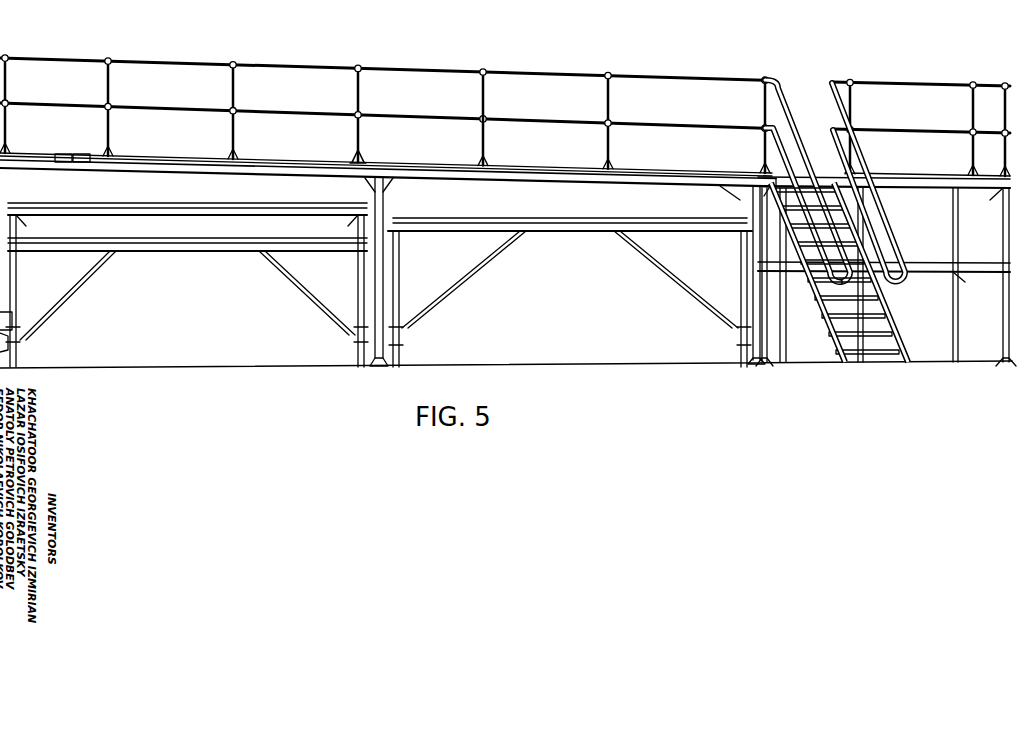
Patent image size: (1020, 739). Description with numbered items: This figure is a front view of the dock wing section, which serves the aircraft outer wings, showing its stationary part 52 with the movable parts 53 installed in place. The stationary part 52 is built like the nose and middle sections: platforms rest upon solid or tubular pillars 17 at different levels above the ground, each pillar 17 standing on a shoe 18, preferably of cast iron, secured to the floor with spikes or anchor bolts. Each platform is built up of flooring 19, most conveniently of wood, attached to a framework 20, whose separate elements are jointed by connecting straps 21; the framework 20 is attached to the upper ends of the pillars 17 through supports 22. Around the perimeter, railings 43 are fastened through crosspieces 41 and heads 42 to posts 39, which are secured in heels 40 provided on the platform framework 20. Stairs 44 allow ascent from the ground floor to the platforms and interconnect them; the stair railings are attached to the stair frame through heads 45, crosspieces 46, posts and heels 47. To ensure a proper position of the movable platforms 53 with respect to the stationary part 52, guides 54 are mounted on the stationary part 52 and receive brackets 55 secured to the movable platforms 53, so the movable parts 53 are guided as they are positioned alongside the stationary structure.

The pillar 17 is at (365, 183).
The shoe 18 is at (1003, 357).
The flooring 19 is at (143, 165).
The framework 20 is at (40, 155).
The connecting strap 21 is at (79, 155).
The support 22 is at (360, 174).
The post 39 is at (363, 97).
The heel 40 is at (362, 162).
The crosspiece 41 is at (483, 118).
The head 42 is at (486, 71).
The railing 43 is at (583, 73).
The stairs 44 is at (892, 343).
The head 45 is at (788, 118).
The crosspiece 46 is at (793, 167).
The heel 47 is at (790, 208).
The stationary part 52 is at (921, 177).
The movable part 53 is at (248, 245).
The guide 54 is at (15, 335).
The bracket 55 is at (10, 317).